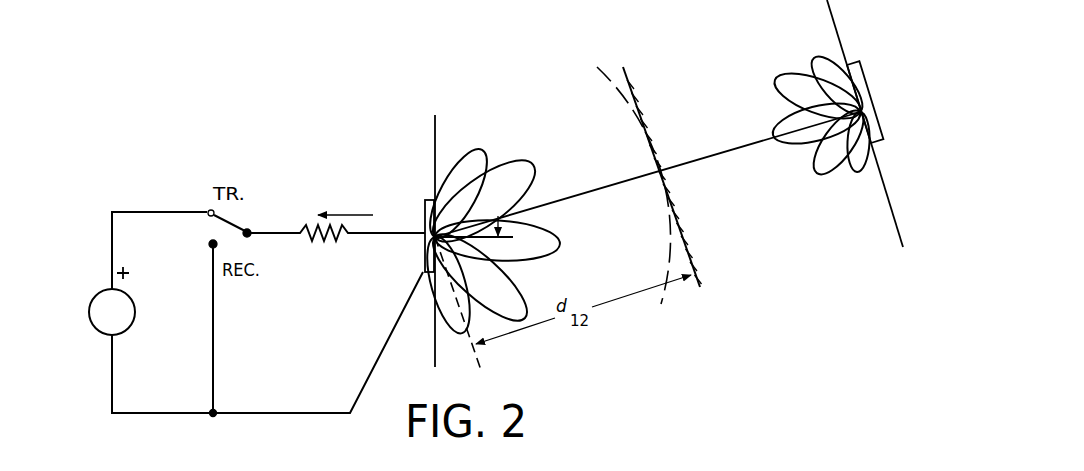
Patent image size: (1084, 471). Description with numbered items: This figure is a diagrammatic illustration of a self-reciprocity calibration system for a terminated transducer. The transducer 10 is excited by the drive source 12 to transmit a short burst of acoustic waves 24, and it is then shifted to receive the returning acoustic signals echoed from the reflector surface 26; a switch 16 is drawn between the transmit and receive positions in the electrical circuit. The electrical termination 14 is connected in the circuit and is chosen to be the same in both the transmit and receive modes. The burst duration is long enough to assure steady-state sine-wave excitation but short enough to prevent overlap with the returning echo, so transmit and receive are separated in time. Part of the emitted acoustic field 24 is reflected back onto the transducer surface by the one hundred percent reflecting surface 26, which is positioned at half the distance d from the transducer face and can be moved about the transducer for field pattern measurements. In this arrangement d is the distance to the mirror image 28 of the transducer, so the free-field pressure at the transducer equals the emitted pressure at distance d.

The transducer 10 is at (425, 200).
The drive source 12 is at (97, 321).
The electrical termination 14 is at (310, 226).
The transmit/receive switch 16 is at (245, 221).
The acoustic waves 24 is at (541, 186).
The reflector surface 26 is at (618, 69).
The mirror image 28 is at (852, 174).